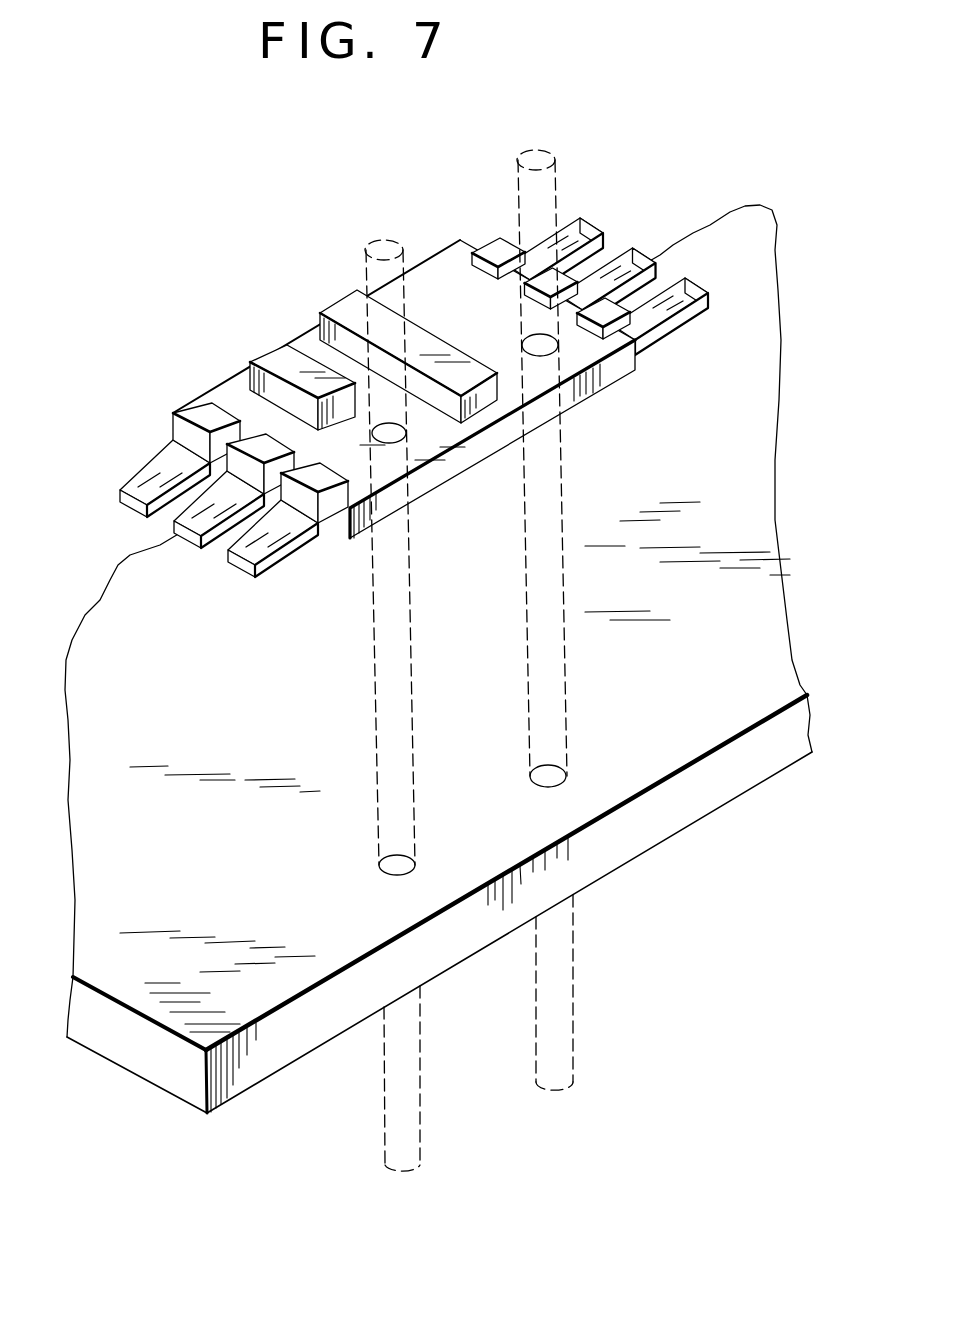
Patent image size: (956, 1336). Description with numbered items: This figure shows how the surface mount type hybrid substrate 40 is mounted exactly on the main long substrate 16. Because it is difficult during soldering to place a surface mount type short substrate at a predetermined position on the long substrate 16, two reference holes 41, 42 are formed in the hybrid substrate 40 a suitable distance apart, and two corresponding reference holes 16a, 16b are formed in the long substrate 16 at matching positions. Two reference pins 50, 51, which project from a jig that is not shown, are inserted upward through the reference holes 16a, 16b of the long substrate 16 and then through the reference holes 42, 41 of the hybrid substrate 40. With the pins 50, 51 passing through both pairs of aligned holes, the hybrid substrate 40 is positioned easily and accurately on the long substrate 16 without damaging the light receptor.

The long substrate 16 is at (606, 848).
The reference hole 16a is at (386, 857).
The reference hole 16b is at (551, 764).
The hybrid substrate 40 is at (225, 395).
The reference hole 41 is at (393, 437).
The reference hole 42 is at (546, 347).
The reference pin 50 is at (380, 715).
The reference pin 51 is at (566, 643).